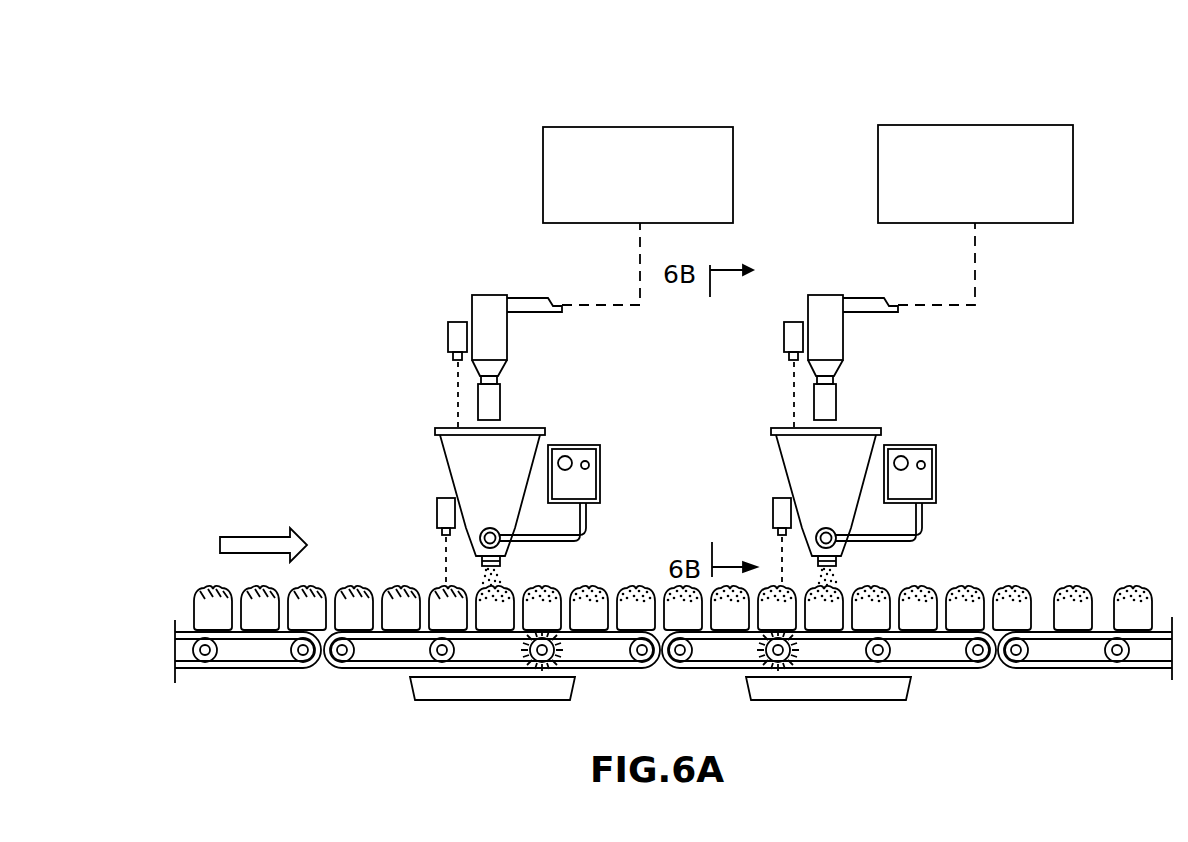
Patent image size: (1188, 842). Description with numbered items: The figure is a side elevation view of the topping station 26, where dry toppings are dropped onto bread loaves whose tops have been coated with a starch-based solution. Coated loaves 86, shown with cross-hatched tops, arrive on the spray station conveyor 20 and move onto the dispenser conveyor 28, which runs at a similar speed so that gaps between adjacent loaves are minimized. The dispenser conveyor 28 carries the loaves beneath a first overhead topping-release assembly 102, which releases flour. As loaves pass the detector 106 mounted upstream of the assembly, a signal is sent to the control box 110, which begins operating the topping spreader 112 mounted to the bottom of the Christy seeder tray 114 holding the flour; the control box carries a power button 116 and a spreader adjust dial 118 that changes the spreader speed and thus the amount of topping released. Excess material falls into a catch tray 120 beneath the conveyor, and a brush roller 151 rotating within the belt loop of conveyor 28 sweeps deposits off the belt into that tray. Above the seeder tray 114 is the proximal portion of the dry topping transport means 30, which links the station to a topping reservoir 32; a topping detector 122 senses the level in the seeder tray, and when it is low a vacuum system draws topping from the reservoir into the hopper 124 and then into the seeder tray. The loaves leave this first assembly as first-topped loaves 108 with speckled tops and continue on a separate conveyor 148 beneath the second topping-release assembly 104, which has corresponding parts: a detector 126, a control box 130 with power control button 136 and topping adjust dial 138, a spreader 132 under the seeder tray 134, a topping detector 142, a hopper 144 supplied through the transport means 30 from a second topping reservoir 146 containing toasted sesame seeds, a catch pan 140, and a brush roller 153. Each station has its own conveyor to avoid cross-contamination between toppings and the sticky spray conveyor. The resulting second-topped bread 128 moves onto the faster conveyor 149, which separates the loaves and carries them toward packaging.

The topping station 26 is at (428, 132).
The topping reservoir 32 is at (682, 127).
The second topping reservoir 146 is at (1022, 125).
The dry topping transport means 30 is at (528, 278).
The hopper 144 is at (888, 321).
The topping-release assembly 102 is at (368, 374).
The second topping-release assembly 104 is at (925, 376).
The topping detector 122 is at (447, 340).
The hopper 124 is at (507, 338).
The topping detector 142 is at (753, 375).
The Christy seeder tray 114 is at (452, 427).
The seeder tray 134 is at (783, 492).
The spreader adjust dial 118 is at (565, 456).
The topping adjust dial 138 is at (903, 430).
The power button 116 is at (590, 463).
The power control button 136 is at (967, 447).
The topping spreader 112 is at (490, 528).
The spreader 132 is at (862, 506).
The control box 110 is at (600, 484).
The control box 130 is at (951, 474).
The detector 106 is at (437, 512).
The detector 126 is at (739, 540).
The bread loaves 86 is at (353, 587).
The first-topped loaf 108 is at (636, 587).
The second-topped bread 128 is at (967, 587).
The spray station conveyor 20 is at (250, 670).
The dispenser conveyor 28 is at (617, 670).
The brush roller 151 is at (542, 668).
The catch tray 120 is at (455, 700).
The conveyor 148 is at (946, 670).
The brush roller 153 is at (778, 668).
The catch pan 140 is at (855, 700).
The faster conveyor 149 is at (1066, 670).